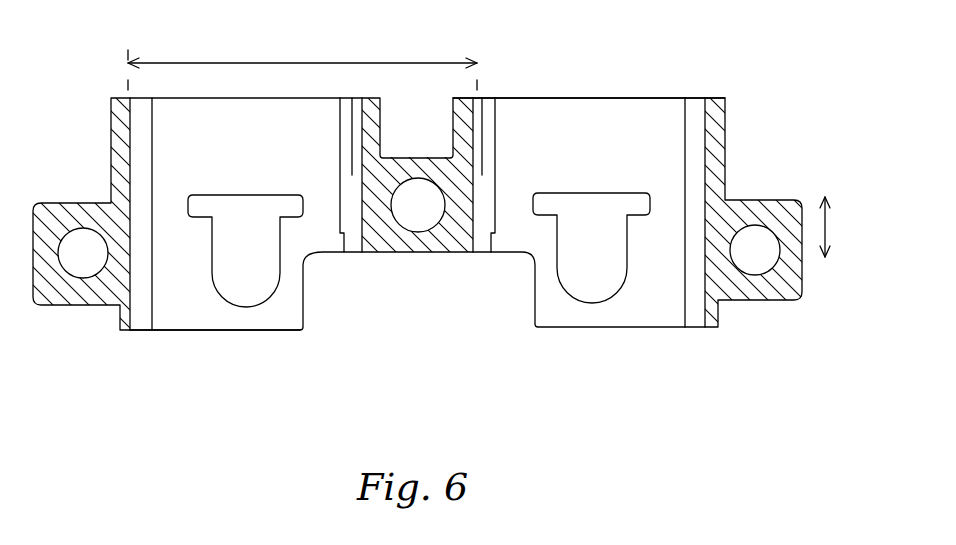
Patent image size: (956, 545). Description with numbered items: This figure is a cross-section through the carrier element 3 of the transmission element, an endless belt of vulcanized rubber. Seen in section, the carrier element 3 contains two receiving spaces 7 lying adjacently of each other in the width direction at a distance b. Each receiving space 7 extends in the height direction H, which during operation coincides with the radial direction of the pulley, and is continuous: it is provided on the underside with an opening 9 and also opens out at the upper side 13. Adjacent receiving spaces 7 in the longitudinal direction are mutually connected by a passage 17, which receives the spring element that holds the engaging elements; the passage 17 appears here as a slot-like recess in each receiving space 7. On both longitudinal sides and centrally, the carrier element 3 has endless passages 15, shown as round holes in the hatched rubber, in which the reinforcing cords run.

The carrier element 3 is at (723, 112).
The receiving space 7 is at (244, 169).
The opening 9 is at (199, 335).
The upper side 13 is at (637, 92).
The passage 15 is at (765, 263).
The passage 17 is at (257, 268).
The distance b is at (233, 62).
The height direction H is at (845, 225).